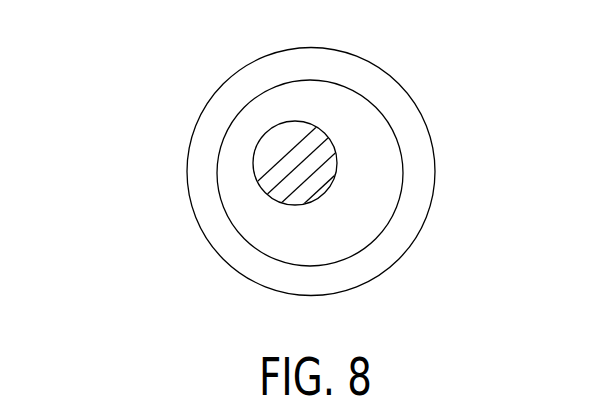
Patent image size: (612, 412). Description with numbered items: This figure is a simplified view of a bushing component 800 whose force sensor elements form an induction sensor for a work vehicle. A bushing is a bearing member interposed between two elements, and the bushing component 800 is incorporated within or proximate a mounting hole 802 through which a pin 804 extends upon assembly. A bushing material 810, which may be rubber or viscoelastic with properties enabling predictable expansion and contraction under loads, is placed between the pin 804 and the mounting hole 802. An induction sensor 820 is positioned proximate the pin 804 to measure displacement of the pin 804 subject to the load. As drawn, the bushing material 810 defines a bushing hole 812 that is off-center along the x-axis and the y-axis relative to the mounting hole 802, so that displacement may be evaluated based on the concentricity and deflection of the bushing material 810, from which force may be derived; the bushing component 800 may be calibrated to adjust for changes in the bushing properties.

The bushing component 800 is at (158, 68).
The induction sensor 820 is at (247, 82).
The mounting hole 802 is at (358, 92).
The bushing material 810 is at (362, 140).
The pin 804 is at (272, 183).
The bushing hole 812 is at (323, 190).